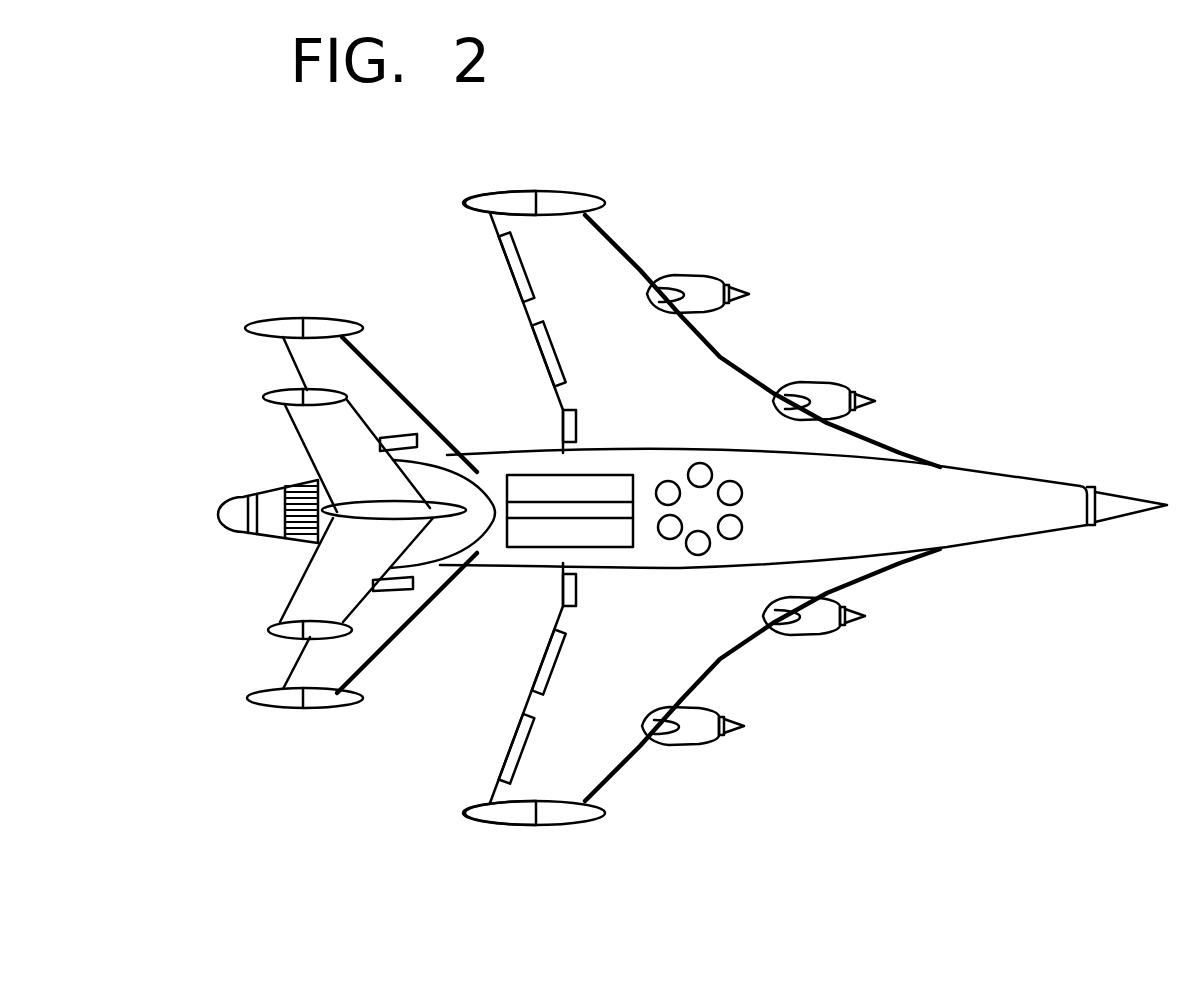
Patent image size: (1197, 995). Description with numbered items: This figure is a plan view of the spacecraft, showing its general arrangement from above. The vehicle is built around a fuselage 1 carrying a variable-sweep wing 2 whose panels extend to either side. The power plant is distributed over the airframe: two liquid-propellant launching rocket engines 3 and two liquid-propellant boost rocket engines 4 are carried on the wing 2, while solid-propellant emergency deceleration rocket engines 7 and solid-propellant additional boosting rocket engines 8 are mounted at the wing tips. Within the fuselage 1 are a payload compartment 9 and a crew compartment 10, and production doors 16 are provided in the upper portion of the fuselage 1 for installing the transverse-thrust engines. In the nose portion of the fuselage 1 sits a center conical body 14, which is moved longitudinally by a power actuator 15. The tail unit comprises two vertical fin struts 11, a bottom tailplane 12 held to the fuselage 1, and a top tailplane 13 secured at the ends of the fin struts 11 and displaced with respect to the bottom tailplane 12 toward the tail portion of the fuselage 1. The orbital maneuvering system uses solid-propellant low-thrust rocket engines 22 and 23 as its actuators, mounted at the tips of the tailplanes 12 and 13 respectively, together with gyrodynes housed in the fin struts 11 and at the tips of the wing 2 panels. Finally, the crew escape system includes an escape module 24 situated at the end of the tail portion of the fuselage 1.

The fuselage 1 is at (1040, 513).
The variable-sweep wing 2 is at (860, 568).
The liquid-propellant launching rocket engines 3 is at (823, 622).
The liquid-propellant boost rocket engines 4 is at (703, 730).
The solid-propellant emergency deceleration rocket engines 7 is at (503, 198).
The solid-propellant additional boosting rocket engines 8 is at (563, 198).
The payload compartment 9 is at (525, 533).
The crew compartment 10 is at (440, 533).
The vertical fin struts 11 is at (398, 582).
The bottom tailplane 12 is at (313, 673).
The top tailplane 13 is at (328, 572).
The center conical body 14 is at (1128, 503).
The power actuator 15 is at (1077, 500).
The production doors 16 is at (730, 481).
The solid-propellant low-thrust rocket engines 22 is at (347, 383).
The solid-propellant low-thrust rocket engines 23 is at (262, 333).
The escape module 24 is at (268, 500).